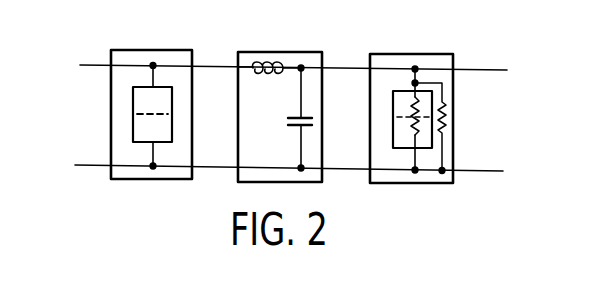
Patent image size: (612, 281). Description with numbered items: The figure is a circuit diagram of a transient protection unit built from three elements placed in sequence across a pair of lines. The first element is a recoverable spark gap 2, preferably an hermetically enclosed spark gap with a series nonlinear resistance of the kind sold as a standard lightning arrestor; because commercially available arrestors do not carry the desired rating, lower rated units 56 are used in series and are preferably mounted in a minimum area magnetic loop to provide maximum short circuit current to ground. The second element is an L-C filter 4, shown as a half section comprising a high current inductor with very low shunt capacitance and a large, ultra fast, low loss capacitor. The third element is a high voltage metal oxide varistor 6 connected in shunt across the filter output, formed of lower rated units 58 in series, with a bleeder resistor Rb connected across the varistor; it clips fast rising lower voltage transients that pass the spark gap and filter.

The recoverable spark gap 2 is at (129, 92).
The L-C filter 4 is at (288, 53).
The high voltage metal oxide variable voltage resistor (varistor) 6 is at (421, 97).
The lower rated units 56 is at (140, 103).
The lower rated units 58 is at (397, 103).
The bleeder resistor Rb is at (447, 107).